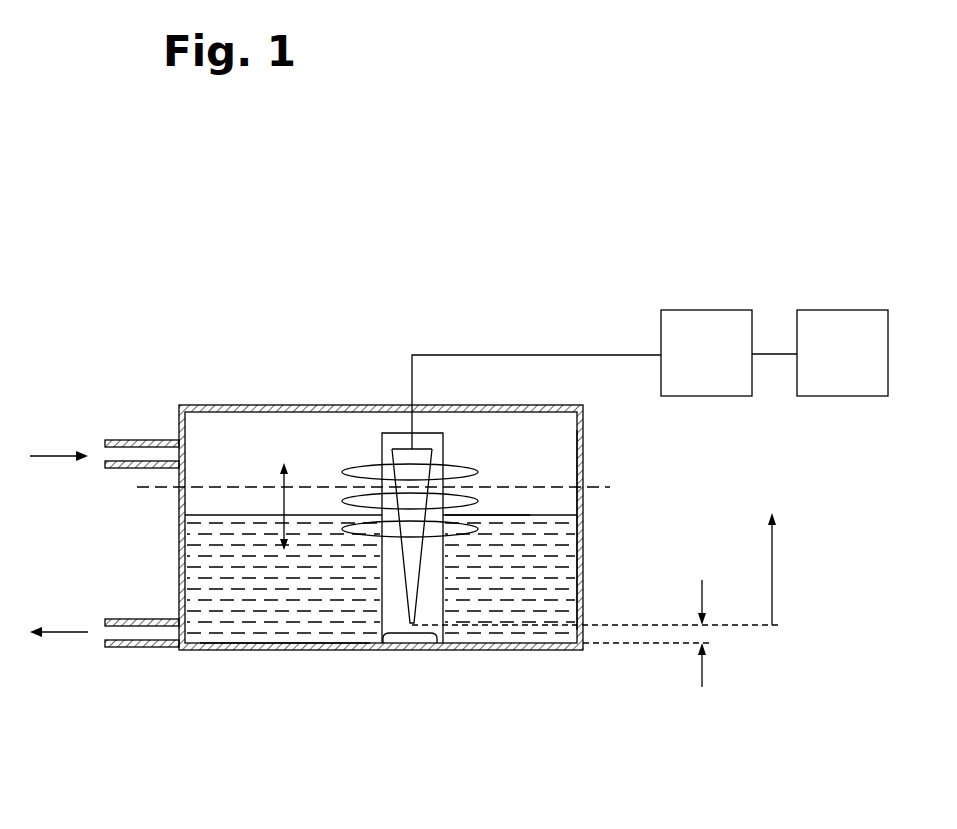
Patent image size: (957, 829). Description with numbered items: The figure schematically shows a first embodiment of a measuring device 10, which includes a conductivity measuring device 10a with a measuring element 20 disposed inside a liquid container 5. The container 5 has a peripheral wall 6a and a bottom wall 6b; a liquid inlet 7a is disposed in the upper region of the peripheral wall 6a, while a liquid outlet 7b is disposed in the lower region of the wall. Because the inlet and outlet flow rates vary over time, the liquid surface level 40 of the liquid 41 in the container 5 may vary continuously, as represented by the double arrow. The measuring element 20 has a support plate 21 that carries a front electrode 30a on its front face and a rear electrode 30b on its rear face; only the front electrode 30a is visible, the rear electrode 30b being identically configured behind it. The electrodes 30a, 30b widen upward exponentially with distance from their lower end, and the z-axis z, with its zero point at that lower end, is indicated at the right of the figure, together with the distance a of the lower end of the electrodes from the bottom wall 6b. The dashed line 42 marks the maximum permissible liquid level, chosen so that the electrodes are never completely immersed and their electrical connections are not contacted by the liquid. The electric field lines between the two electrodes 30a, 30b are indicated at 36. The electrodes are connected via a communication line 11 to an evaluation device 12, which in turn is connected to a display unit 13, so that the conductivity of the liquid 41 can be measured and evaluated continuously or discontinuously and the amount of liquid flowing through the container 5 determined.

The liquid container 5 is at (594, 545).
The peripheral wall 6a is at (583, 595).
The bottom wall 6b is at (285, 652).
The liquid inlet 7a is at (130, 440).
The liquid outlet 7b is at (130, 647).
The measuring device 10 is at (470, 483).
The conductivity measuring device 10a is at (630, 282).
The communication line 11 is at (525, 355).
The evaluation device 12 is at (702, 310).
The display unit 13 is at (842, 310).
The measuring element 20 is at (374, 445).
The support plate 21 is at (398, 652).
The front electrode 30a is at (404, 456).
The rear electrode 30b is at (412, 427).
The electric field lines 36 is at (478, 468).
The liquid surface level 40 is at (533, 515).
The liquid 41 is at (215, 595).
The maximum permissible liquid level 42 is at (137, 487).
The distance a is at (708, 632).
The z-axis z is at (772, 563).